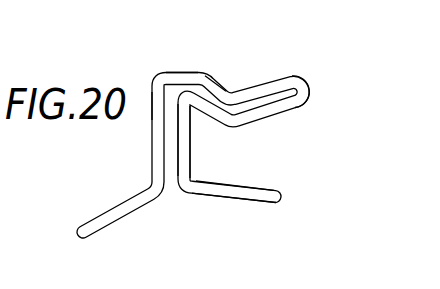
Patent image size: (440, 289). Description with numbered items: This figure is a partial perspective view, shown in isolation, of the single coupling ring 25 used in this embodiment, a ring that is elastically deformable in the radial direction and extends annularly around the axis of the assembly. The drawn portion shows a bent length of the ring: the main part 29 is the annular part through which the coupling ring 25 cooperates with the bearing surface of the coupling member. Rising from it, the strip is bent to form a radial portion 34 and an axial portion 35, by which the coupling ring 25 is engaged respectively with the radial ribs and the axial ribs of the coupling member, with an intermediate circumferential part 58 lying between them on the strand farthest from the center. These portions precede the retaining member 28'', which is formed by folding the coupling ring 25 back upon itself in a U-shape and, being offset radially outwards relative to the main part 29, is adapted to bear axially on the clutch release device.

The coupling ring 25 is at (275, 182).
The retaining member 28'' is at (312, 63).
The main part 29 is at (225, 190).
The radial portion 34 is at (181, 139).
The axial portion 35 is at (220, 105).
The intermediate circumferential part 58 is at (177, 83).